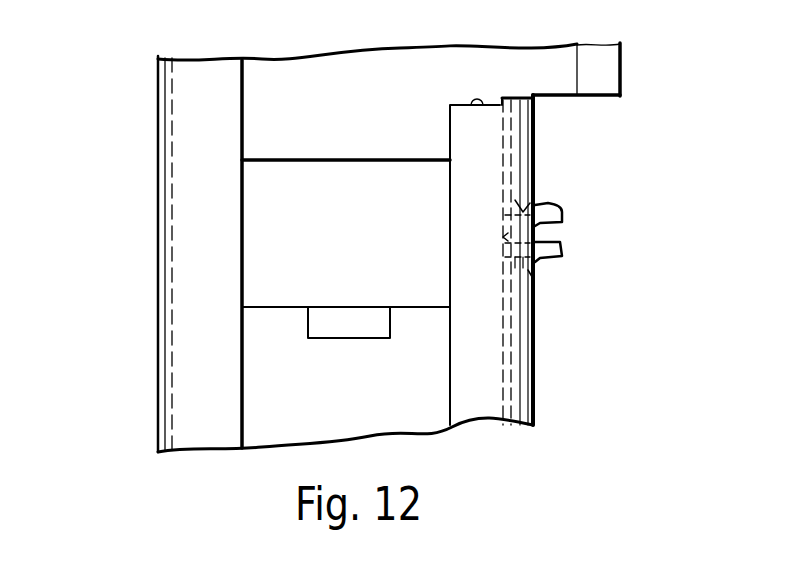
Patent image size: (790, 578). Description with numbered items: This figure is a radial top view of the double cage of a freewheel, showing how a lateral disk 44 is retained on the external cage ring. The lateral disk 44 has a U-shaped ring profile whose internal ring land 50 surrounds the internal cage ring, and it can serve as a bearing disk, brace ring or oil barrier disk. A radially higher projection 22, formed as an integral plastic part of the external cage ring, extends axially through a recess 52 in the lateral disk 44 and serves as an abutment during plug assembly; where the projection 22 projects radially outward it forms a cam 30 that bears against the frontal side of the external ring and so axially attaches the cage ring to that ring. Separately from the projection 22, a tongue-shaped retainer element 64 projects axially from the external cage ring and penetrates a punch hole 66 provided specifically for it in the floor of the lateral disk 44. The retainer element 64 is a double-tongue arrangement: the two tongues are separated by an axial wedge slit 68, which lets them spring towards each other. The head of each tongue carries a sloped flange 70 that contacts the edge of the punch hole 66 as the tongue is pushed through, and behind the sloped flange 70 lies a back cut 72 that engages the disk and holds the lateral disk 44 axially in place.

The projection 22 is at (555, 60).
The cam 30 is at (610, 80).
The lateral disk 44 is at (185, 142).
The internal ring land 50 is at (490, 363).
The recess 52 is at (477, 103).
The tongue-shaped retainer element 64 is at (548, 206).
The punch hole 66 is at (535, 192).
The axial wedge slit 68 is at (545, 233).
The sloped flange 70 is at (548, 255).
The back cut 72 is at (535, 285).